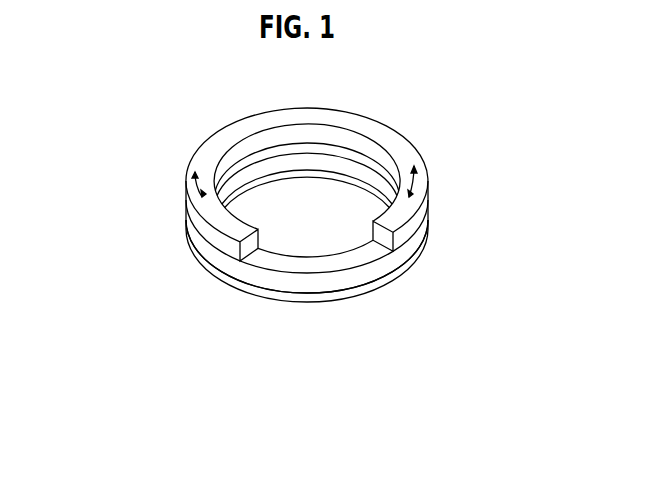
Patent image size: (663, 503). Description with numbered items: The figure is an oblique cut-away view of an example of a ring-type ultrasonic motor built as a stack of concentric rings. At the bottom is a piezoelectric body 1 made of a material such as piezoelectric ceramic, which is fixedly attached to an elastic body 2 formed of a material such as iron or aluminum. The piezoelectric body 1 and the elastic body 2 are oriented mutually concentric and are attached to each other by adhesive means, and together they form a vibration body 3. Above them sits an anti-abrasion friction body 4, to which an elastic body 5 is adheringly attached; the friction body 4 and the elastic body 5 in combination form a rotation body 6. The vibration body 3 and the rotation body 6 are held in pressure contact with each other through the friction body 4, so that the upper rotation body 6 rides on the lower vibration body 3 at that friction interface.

The piezoelectric body 1 is at (402, 275).
The elastic body 2 is at (405, 257).
The vibration body 3 is at (494, 271).
The friction body 4 is at (213, 257).
The elastic body 5 is at (207, 228).
The rotation body 6 is at (96, 211).